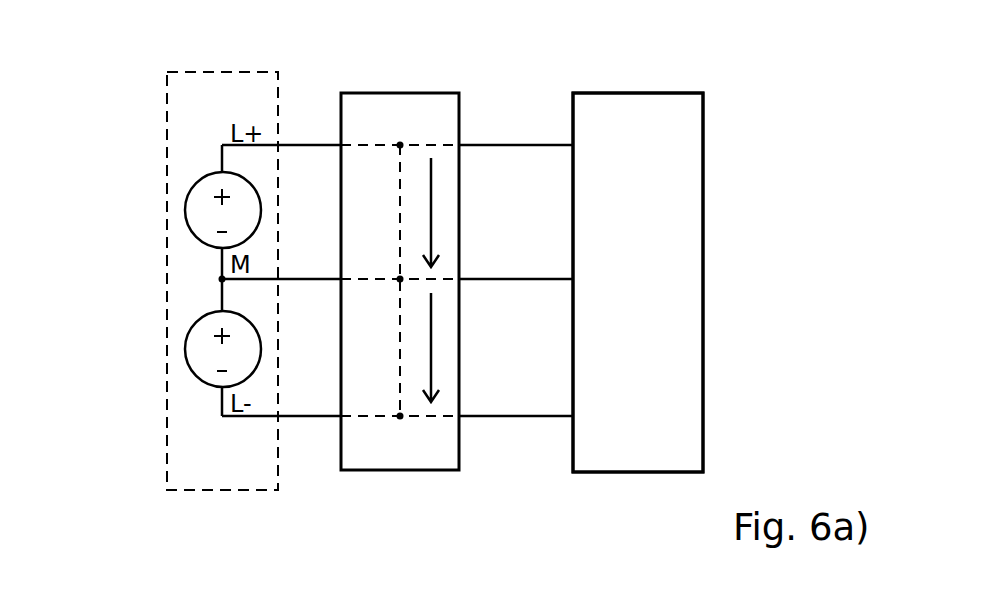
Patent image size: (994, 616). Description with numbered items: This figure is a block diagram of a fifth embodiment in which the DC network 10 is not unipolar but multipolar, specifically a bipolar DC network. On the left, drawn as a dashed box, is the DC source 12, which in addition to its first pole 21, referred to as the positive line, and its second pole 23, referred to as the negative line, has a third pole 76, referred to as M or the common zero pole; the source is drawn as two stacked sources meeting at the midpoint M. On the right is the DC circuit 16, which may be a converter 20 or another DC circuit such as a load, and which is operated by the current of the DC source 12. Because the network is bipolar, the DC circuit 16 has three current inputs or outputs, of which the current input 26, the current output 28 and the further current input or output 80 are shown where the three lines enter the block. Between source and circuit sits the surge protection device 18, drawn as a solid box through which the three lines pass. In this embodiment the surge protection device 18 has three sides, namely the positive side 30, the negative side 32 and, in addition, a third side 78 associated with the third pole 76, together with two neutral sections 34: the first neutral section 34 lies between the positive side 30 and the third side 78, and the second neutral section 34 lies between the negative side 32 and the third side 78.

The DC network 10 is at (118, 73).
The DC source 12 is at (200, 490).
The DC circuit 16 is at (649, 472).
The asymmetric surge protection device 18 is at (373, 92).
The converter 20 is at (649, 472).
The first pole 21 is at (208, 145).
The second pole 23 is at (210, 418).
The current input 26 is at (568, 138).
The current output 28 is at (567, 433).
The positive side 30 is at (428, 138).
The negative side 32 is at (382, 447).
The neutral section 34 is at (399, 385).
The third pole 76 is at (203, 281).
The third side 78 is at (360, 282).
The current input or output 80 is at (568, 275).